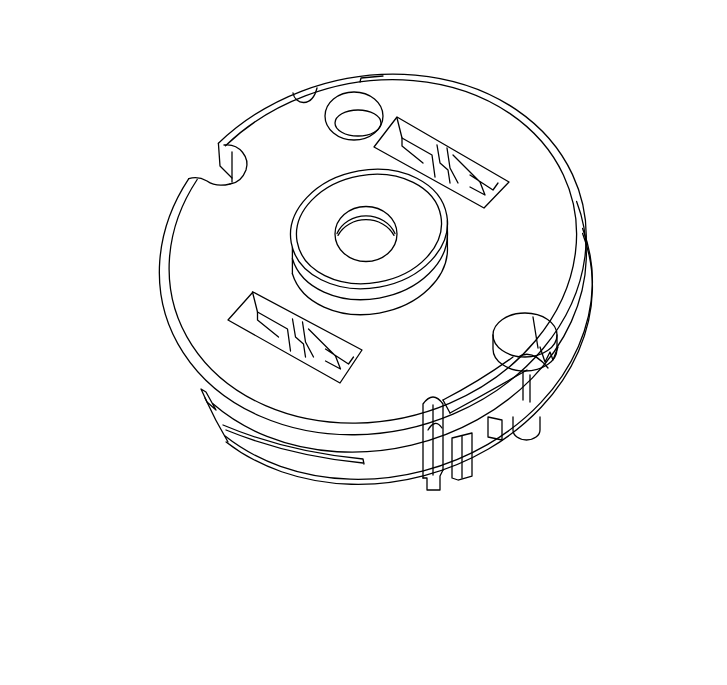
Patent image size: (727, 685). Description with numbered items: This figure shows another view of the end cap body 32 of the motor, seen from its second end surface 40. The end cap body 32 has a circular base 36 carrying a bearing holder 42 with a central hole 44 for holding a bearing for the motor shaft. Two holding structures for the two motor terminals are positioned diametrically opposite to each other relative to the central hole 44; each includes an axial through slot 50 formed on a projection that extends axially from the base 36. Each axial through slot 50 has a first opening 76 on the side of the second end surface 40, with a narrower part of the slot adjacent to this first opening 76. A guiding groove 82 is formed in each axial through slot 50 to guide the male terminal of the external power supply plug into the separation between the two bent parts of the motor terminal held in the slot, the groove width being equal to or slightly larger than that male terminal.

The end cap body 32 is at (160, 88).
The circular base 36 is at (200, 383).
The second end surface 40 is at (213, 282).
The bearing holder 42 is at (312, 252).
The central hole 44 is at (362, 237).
The axial through slot 50 is at (303, 345).
The first opening 76 is at (450, 167).
The guiding groove 82 is at (468, 178).